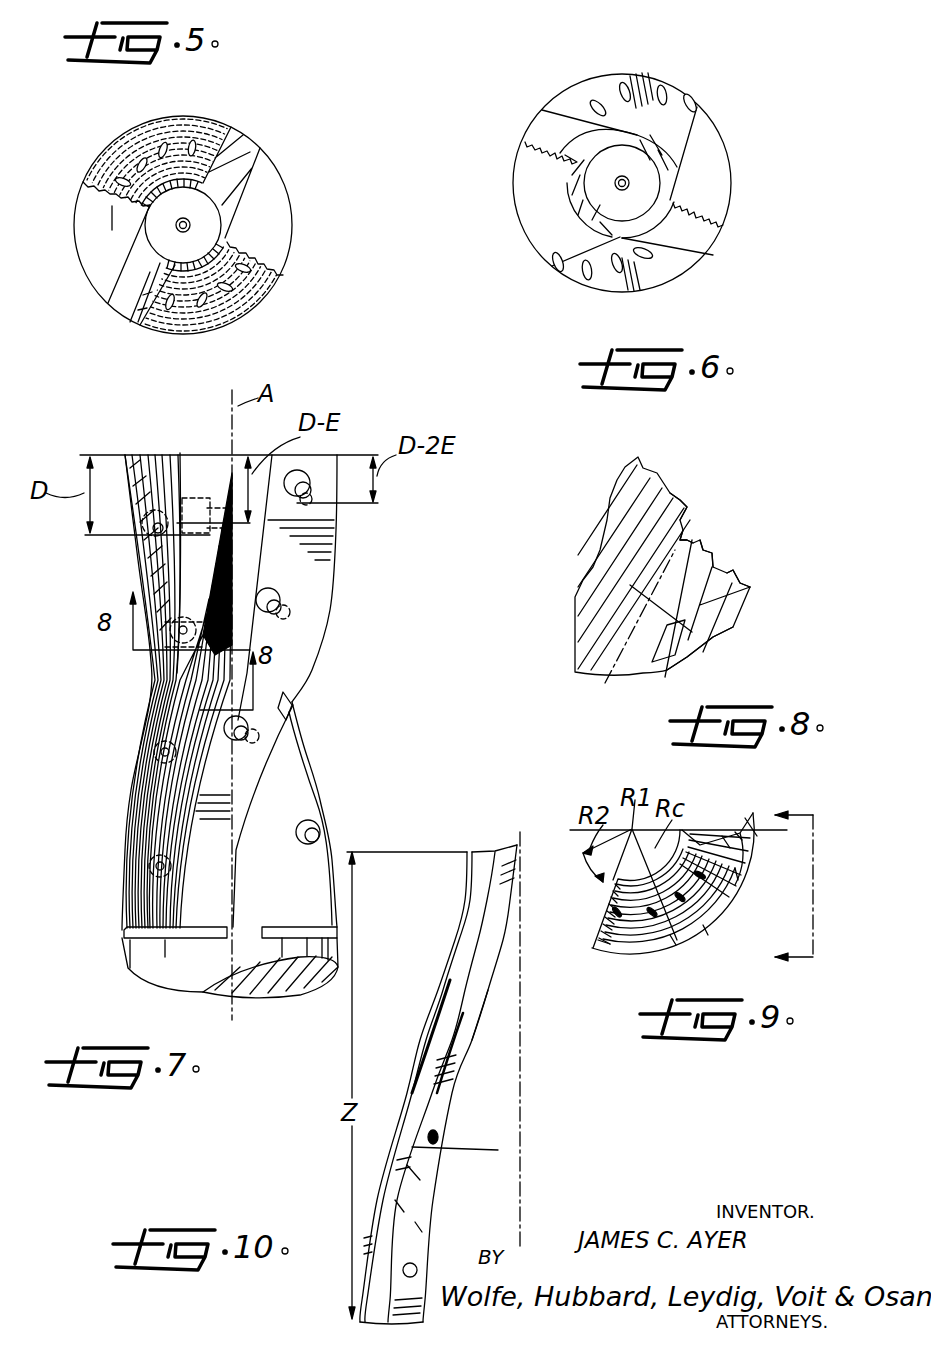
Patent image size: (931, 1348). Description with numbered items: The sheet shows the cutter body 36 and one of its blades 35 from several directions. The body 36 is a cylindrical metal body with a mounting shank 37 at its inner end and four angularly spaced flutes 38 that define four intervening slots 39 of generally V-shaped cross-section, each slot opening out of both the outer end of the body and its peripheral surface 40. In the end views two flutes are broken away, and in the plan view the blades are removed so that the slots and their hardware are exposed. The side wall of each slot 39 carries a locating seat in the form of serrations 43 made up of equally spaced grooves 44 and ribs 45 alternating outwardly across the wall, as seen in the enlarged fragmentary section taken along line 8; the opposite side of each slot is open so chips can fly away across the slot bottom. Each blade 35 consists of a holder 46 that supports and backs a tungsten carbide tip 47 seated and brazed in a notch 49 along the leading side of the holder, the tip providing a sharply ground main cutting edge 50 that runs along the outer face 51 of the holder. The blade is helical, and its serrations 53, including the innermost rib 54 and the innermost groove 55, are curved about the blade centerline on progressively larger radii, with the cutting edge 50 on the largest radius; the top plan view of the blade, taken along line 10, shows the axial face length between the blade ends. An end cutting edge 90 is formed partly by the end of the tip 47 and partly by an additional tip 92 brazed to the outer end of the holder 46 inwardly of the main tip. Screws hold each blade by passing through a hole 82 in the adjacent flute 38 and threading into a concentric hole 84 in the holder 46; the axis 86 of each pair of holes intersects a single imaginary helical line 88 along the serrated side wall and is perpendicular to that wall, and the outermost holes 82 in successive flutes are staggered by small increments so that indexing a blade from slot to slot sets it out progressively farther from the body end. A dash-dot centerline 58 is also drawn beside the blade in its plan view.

In FIG. 10, the cutting blade 35 is at (478, 908).
In FIG. 5, the cutter body 36 is at (236, 156).
In FIG. 6, the cutter body 36 is at (605, 178).
In FIG. 7, the cutter body 36 is at (150, 689).
In FIG. 8, the cutter body 36 is at (600, 529).
In FIG. 7, the mounting shank 37 is at (142, 967).
In FIG. 6, the flute 38 is at (572, 98).
In FIG. 7, the flute 38 is at (150, 453).
In FIG. 8, the flute 38 is at (590, 603).
In FIG. 5, the slot 39 is at (110, 170).
In FIG. 6, the slot 39 is at (700, 147).
In FIG. 8, the slot 39 is at (690, 519).
In FIG. 5, the peripheral surface 40 is at (100, 280).
In FIG. 8, the peripheral surface 40 is at (735, 639).
In FIG. 5, the serrations 43 is at (180, 140).
In FIG. 6, the serrations 43 is at (548, 158).
In FIG. 7, the serrations 43 is at (150, 562).
In FIG. 8, the serrations 43 is at (758, 587).
In FIG. 8, the grooves 44 is at (705, 541).
In FIG. 8, the ribs 45 is at (731, 567).
In FIG. 9, the holder 46 is at (712, 832).
In FIG. 10, the holder 46 is at (415, 1227).
In FIG. 9, the tip 47 is at (746, 842).
In FIG. 10, the tip 47 is at (395, 1207).
In FIG. 9, the notch 49 is at (735, 882).
In FIG. 10, the notch 49 is at (407, 1172).
In FIG. 9, the main cutting edge 50 is at (720, 905).
In FIG. 10, the main cutting edge 50 is at (480, 990).
In FIG. 9, the outer face 51 is at (706, 932).
In FIG. 10, the outer face 51 is at (465, 953).
In FIG. 9, the serrations 53 is at (605, 926).
In FIG. 9, the innermost rib 54 is at (616, 946).
In FIG. 9, the innermost groove 55 is at (680, 937).
In FIG. 10, the axis 58 is at (522, 1100).
In FIG. 5, the hole 82 is at (165, 142).
In FIG. 6, the hole 82 is at (672, 93).
In FIG. 7, the hole 82 is at (152, 531).
In FIG. 8, the hole 82 is at (665, 672).
In FIG. 9, the hole 84 is at (612, 906).
In FIG. 10, the hole 84 is at (437, 1133).
In FIG. 7, the axis 86 is at (172, 643).
In FIG. 8, the axis 86 is at (602, 683).
In FIG. 5, the imaginary helical line 88 is at (102, 220).
In FIG. 7, the imaginary helical line 88 is at (165, 822).
In FIG. 9, the end cutting edge 90 is at (730, 832).
In FIG. 9, the additional tip 92 is at (743, 832).
In FIG. 9, the section line 8— 8 is at (757, 833).
In FIG. 9, the section line 10— 10 is at (815, 883).